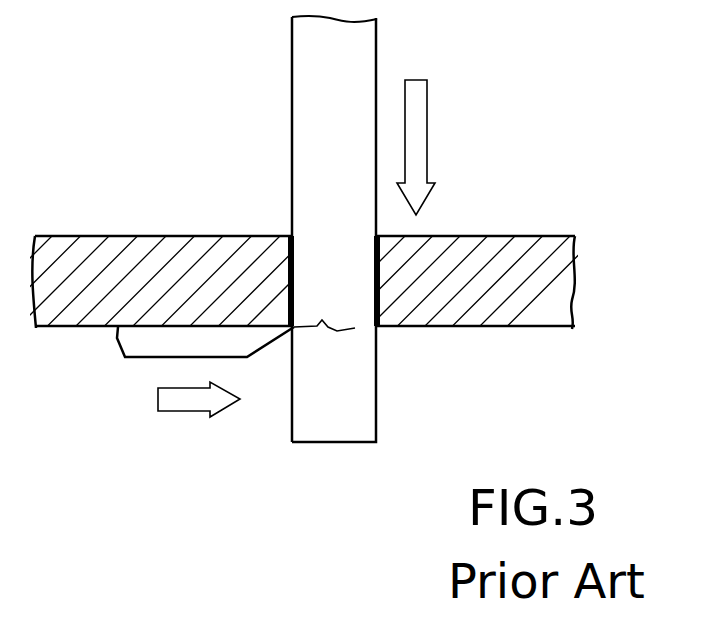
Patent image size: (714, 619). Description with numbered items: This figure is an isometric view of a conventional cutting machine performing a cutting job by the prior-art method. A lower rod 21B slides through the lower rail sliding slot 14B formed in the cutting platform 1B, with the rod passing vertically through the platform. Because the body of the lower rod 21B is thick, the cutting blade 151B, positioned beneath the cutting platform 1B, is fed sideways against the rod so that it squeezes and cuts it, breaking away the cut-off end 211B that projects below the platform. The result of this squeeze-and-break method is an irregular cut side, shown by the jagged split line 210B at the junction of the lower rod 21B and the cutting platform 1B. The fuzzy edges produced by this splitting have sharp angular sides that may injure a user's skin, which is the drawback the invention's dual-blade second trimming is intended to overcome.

The cutting platform 1B is at (152, 243).
The lower rod 21B is at (321, 84).
The cut-off end 211B is at (363, 412).
The lower rail sliding slot 14B is at (383, 279).
The cutting blade 151B is at (153, 350).
The split line 210B is at (322, 328).